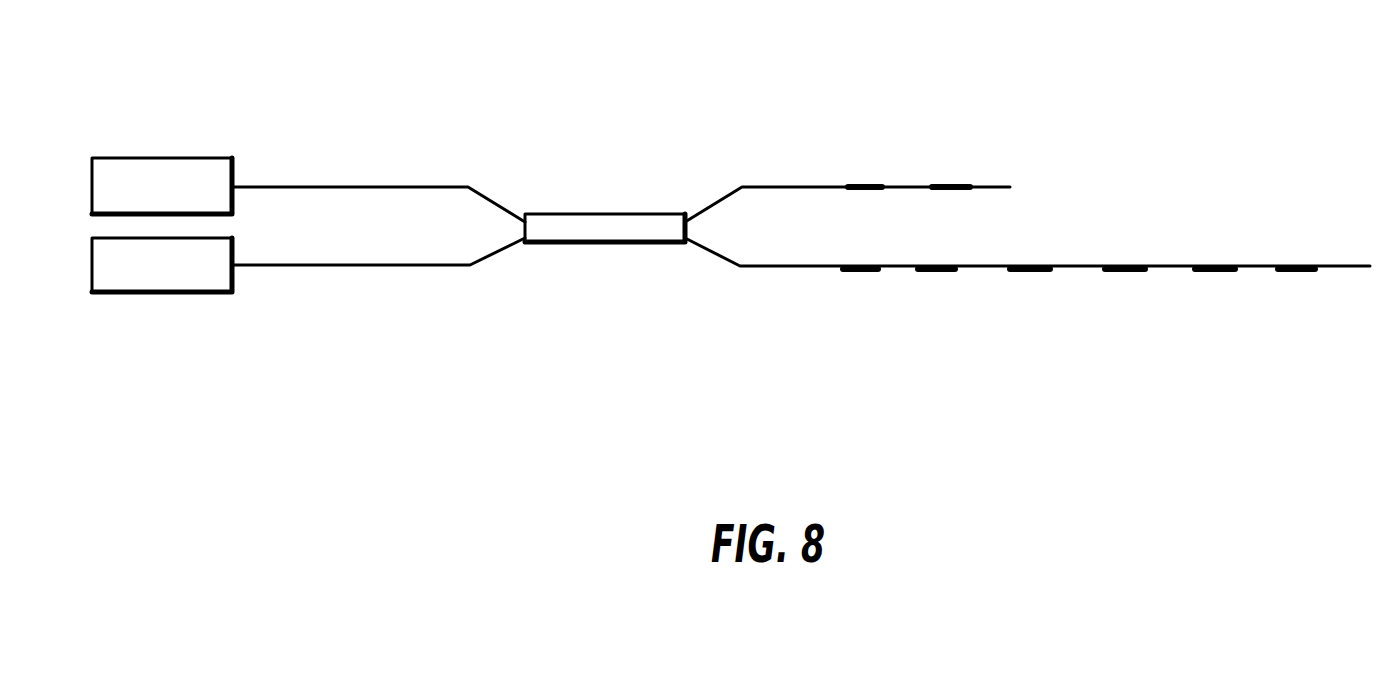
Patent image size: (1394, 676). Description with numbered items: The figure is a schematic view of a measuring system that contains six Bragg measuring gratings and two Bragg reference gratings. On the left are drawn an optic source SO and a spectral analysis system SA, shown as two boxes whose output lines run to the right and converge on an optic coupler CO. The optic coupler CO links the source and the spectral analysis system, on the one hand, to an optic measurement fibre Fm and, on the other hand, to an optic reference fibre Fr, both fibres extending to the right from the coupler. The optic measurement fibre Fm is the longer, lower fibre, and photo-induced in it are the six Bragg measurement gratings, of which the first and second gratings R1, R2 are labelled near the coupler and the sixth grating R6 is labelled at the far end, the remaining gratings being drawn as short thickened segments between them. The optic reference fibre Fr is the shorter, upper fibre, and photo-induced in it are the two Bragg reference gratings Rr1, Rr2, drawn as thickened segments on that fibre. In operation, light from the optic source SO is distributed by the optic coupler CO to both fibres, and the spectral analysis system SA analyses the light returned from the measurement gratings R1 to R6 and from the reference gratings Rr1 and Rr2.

The optic source SO is at (182, 163).
The spectral analysis system SA is at (178, 280).
The optic coupler CO is at (578, 218).
The optic reference fibre Fr is at (767, 186).
The optic measurement fibre Fm is at (758, 268).
The Bragg reference grating Rr1 is at (865, 185).
The Bragg reference grating Rr2 is at (958, 183).
The Bragg measuring grating R1 is at (856, 272).
The Bragg measuring grating R2 is at (932, 272).
The Bragg measuring grating R6 is at (1297, 272).